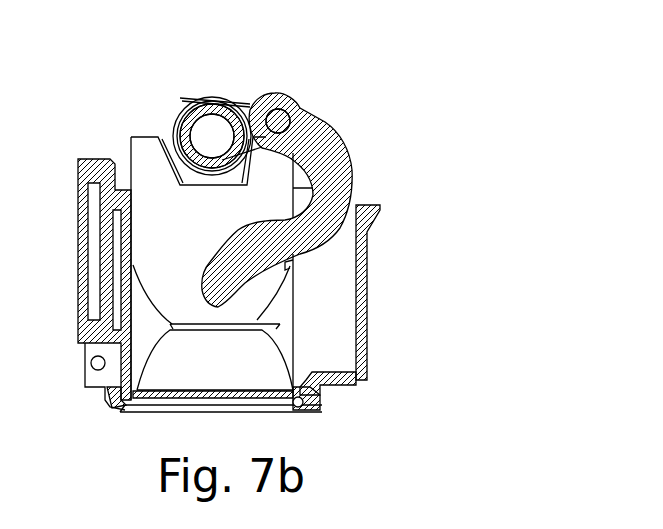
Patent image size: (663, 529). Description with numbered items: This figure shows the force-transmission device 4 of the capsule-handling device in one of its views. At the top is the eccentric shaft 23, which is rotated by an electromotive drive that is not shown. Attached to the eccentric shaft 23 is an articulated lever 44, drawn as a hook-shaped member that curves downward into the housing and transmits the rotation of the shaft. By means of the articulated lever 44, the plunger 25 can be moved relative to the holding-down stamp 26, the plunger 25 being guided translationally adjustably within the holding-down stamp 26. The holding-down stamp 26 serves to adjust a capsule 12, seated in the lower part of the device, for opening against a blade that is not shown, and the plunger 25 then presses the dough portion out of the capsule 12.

The force-transmission device 4 is at (262, 79).
The capsule 12 is at (283, 342).
The eccentric shaft 23 is at (205, 105).
The plunger 25 is at (262, 280).
The holding-down stamp 26 is at (352, 382).
The articulated lever 44 is at (319, 144).